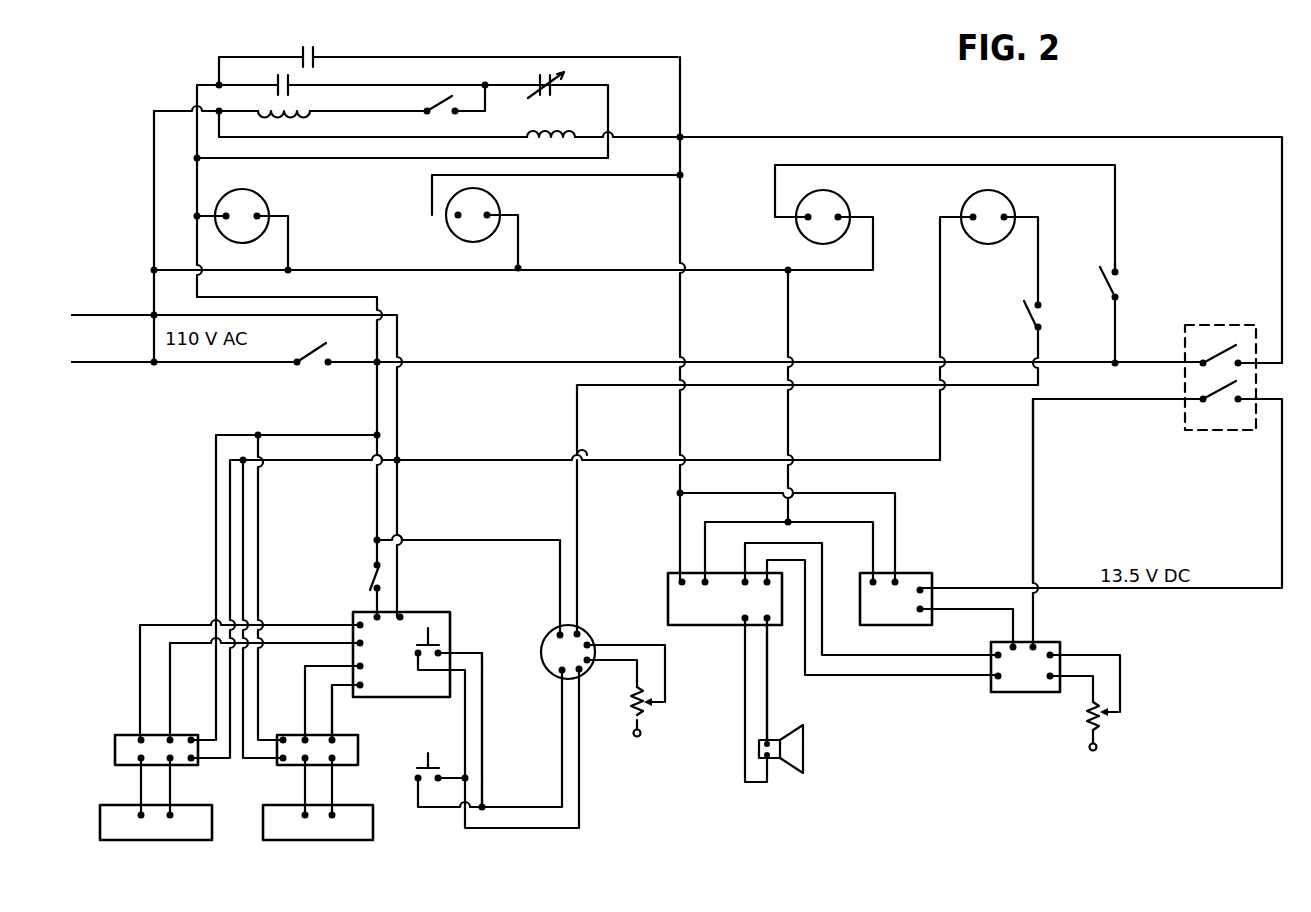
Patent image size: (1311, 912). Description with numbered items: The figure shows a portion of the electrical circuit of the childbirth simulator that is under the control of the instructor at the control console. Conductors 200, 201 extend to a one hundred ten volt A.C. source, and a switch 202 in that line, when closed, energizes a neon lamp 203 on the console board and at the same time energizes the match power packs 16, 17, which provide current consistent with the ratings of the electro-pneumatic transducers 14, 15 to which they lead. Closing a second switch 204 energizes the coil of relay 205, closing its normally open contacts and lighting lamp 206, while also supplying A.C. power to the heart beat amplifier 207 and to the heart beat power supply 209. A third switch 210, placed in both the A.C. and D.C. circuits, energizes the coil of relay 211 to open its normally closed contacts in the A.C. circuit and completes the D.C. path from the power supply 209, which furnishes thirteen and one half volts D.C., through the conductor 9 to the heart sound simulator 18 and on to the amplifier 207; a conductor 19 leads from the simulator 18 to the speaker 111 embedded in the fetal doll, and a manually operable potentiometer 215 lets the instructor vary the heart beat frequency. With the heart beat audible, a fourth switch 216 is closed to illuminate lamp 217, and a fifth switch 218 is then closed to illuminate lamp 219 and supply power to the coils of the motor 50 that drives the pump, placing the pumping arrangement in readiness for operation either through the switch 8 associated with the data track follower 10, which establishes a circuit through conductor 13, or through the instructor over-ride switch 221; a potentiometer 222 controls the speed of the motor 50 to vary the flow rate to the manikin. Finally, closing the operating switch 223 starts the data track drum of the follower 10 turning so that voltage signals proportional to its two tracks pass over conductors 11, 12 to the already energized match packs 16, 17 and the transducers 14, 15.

The switch 8 is at (440, 645).
The conductor 9 is at (1035, 512).
The two-channel data track follower 10 is at (418, 620).
The conductor 11 is at (278, 625).
The conductor 12 is at (334, 728).
The conductor 13 is at (484, 718).
The electro-pneumatic transducer 14 is at (196, 812).
The electro-pneumatic transducer 15 is at (368, 828).
The match pack 16 is at (128, 738).
The match pack 17 is at (294, 740).
The heart sound simulator 18 is at (1032, 690).
The conductor 19 is at (769, 702).
The motor 50 is at (588, 637).
The speaker 111 is at (798, 752).
The conductor 200 is at (87, 323).
The conductor 201 is at (96, 365).
The switch 202 is at (320, 369).
The neon lamp 203 is at (258, 212).
The second switch 204 is at (430, 106).
The relay 205 is at (312, 118).
The lamp 206 is at (490, 212).
The heart beat amplifier 207 is at (667, 600).
The heart beat power supply 209 is at (910, 572).
The third switch 210 is at (1245, 377).
The relay 211 is at (545, 130).
The potentiometer 215 is at (1108, 720).
The fourth switch 216 is at (1120, 283).
The lamp 217 is at (838, 210).
The fifth switch 218 is at (1042, 320).
The lamp 219 is at (1006, 208).
The instructor over-ride switch 221 is at (435, 760).
The potentiometer 222 is at (644, 722).
The operating switch 223 is at (370, 582).